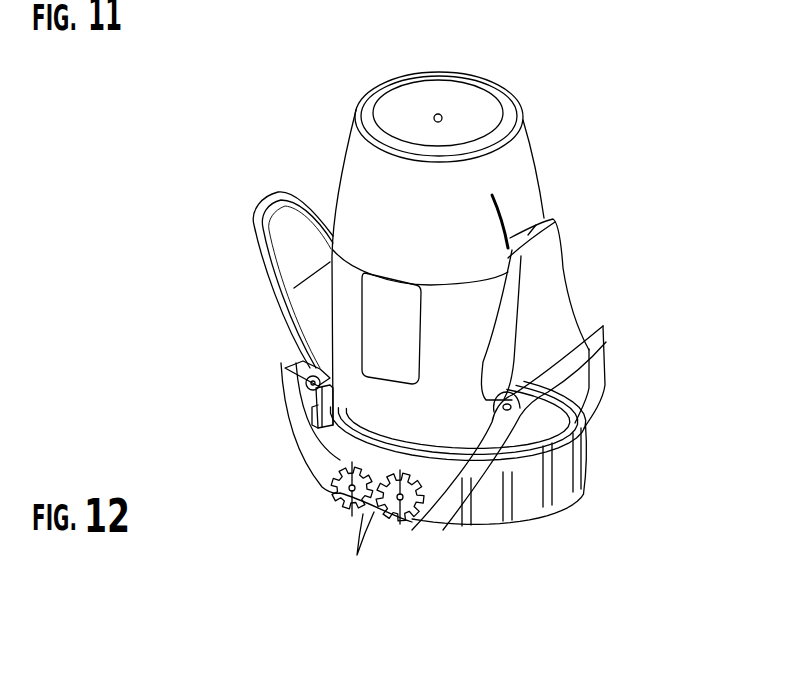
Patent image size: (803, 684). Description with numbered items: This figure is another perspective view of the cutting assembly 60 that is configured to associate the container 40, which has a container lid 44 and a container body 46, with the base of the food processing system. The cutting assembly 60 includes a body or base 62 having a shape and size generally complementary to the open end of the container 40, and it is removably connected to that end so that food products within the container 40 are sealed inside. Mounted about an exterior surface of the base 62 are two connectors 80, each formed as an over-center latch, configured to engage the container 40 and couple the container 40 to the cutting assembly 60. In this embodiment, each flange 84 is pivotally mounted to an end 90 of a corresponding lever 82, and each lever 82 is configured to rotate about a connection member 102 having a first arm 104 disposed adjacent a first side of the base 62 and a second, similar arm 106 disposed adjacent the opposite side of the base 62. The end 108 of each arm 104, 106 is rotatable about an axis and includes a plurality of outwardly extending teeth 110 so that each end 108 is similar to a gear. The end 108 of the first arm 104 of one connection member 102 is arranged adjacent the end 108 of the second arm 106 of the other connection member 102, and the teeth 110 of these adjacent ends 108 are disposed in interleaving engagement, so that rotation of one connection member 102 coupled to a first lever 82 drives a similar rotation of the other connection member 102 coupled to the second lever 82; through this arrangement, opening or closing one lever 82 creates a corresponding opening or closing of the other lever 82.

The container 40 is at (406, 212).
The container lid 44 is at (430, 93).
The container body 46 is at (366, 183).
The cutting assembly 60 is at (400, 476).
The base 62 is at (528, 482).
The connector 80 is at (399, 361).
The lever 82 is at (292, 240).
The flange 84 is at (300, 389).
The end 90 is at (300, 358).
The connection member 102 is at (545, 490).
The first arm 104 is at (477, 472).
The second arm 106 is at (289, 443).
The end 108 is at (345, 500).
The teeth 110 is at (361, 551).